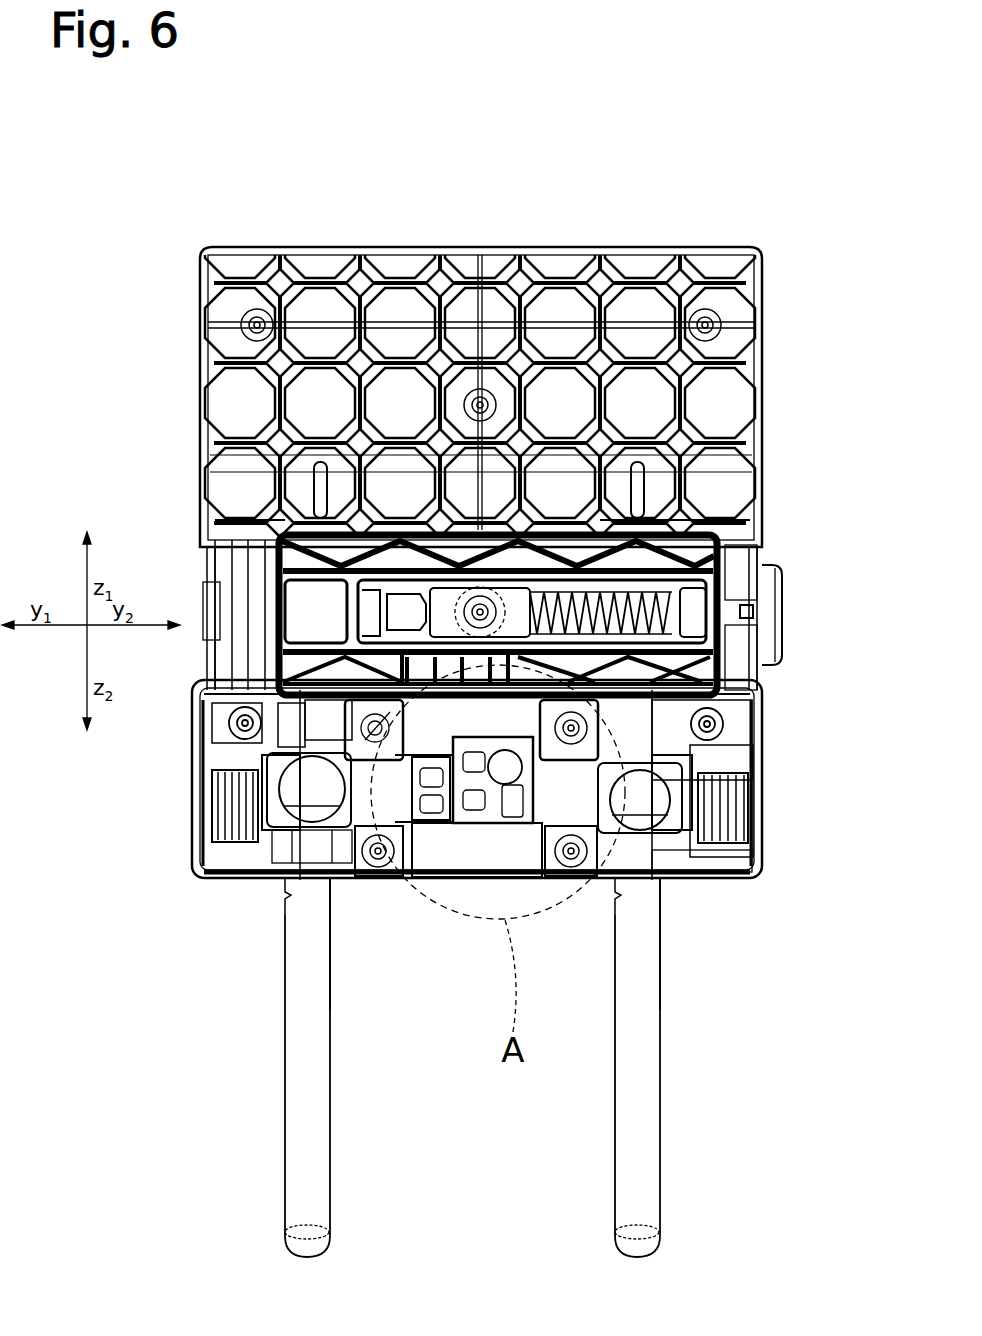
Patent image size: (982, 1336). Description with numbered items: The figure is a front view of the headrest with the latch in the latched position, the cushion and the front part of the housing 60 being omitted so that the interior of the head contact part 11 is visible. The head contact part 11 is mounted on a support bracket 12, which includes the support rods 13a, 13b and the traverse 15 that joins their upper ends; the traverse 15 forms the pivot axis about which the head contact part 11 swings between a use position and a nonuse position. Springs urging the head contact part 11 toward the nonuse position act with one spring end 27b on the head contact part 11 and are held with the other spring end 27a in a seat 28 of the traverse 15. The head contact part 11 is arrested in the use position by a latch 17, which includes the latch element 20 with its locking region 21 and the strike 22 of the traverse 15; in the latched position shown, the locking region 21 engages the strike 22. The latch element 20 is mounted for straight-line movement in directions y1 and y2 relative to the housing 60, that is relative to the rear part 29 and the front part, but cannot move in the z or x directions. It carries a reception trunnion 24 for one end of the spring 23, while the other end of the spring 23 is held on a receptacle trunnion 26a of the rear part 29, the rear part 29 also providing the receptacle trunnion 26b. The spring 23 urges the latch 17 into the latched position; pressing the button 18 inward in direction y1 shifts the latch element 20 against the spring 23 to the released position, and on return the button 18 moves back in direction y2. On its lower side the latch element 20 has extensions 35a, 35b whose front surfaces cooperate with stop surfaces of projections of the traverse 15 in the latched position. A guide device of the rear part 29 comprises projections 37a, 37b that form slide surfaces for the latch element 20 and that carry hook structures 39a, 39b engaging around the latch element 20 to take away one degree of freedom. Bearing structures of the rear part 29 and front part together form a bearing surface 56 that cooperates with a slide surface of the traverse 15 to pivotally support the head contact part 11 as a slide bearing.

The head contact part 11 is at (763, 241).
The support bracket 12 is at (305, 967).
The support rod 13a is at (303, 1108).
The support rod 13b is at (633, 1148).
The traverse 15 is at (488, 840).
The latch 17 is at (786, 620).
The button 18 is at (780, 577).
The latch element 20 is at (757, 540).
The locking region 21 is at (358, 878).
The strike 22 is at (470, 815).
The spring 23 is at (700, 548).
The reception trunnion 24 is at (700, 652).
The receptacle trunnion 26a is at (558, 545).
The receptacle trunnion 26b is at (405, 598).
The spring end 27a is at (253, 775).
The spring end 27b is at (207, 780).
The seat 28 is at (198, 852).
The rear part 29 is at (645, 262).
The extension 35a is at (212, 758).
The extension 35b is at (725, 737).
The projection 37a is at (263, 507).
The projection 37b is at (662, 545).
The hook structure 39a is at (273, 472).
The hook structure 39b is at (640, 520).
The bearing surface 56 is at (297, 853).
The housing 60 is at (444, 244).